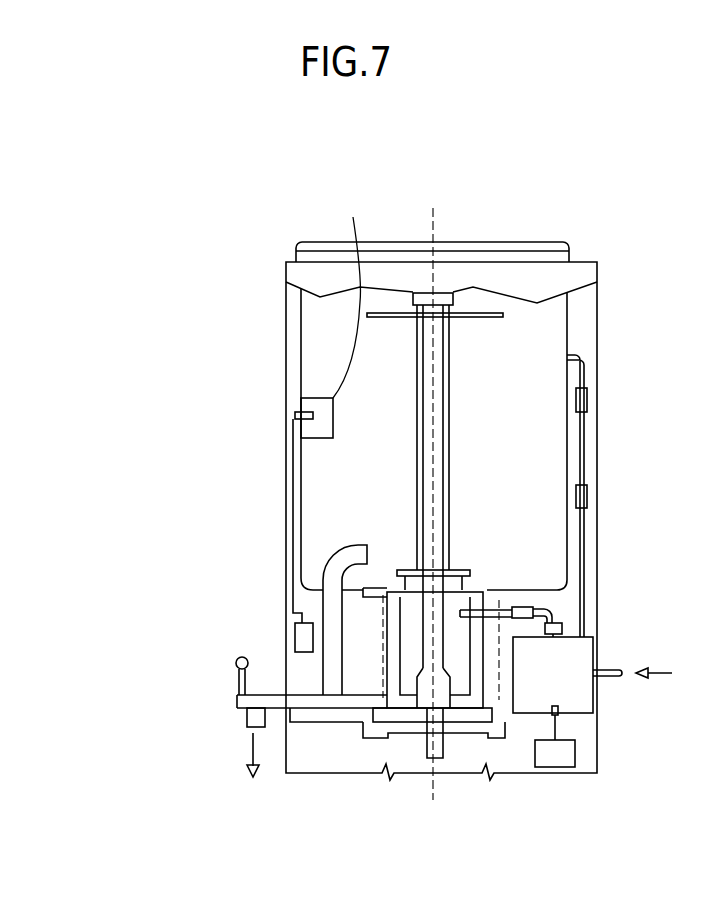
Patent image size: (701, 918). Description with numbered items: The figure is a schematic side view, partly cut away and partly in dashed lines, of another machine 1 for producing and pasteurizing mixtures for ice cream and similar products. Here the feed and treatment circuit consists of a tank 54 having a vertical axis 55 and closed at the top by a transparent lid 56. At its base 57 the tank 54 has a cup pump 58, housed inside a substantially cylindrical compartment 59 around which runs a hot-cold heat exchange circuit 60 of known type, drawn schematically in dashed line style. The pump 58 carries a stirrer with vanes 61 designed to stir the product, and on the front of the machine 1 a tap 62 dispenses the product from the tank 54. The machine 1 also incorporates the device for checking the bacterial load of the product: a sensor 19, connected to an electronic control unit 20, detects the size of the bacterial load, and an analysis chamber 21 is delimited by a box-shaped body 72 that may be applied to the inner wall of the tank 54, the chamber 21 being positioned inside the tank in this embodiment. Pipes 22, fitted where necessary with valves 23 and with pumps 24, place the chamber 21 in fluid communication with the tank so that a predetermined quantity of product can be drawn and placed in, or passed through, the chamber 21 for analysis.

The machine 1 is at (533, 196).
The sensor 19 is at (293, 415).
The electronic control unit 20 is at (293, 630).
The analysis chamber 21 is at (348, 293).
The pipes 22 is at (589, 430).
The valves 23 is at (589, 496).
The pumps 24 is at (589, 393).
The tank 54 is at (304, 331).
The vertical axis 55 is at (440, 228).
The transparent lid 56 is at (311, 240).
The base 57 is at (507, 587).
The cup pump 58 is at (460, 710).
The cylindrical compartment 59 is at (388, 598).
The hot-cold heat exchange circuit 60 is at (498, 704).
The stirrer with vanes 61 is at (450, 658).
The tap 62 is at (234, 697).
The box-shaped body 72 is at (313, 399).